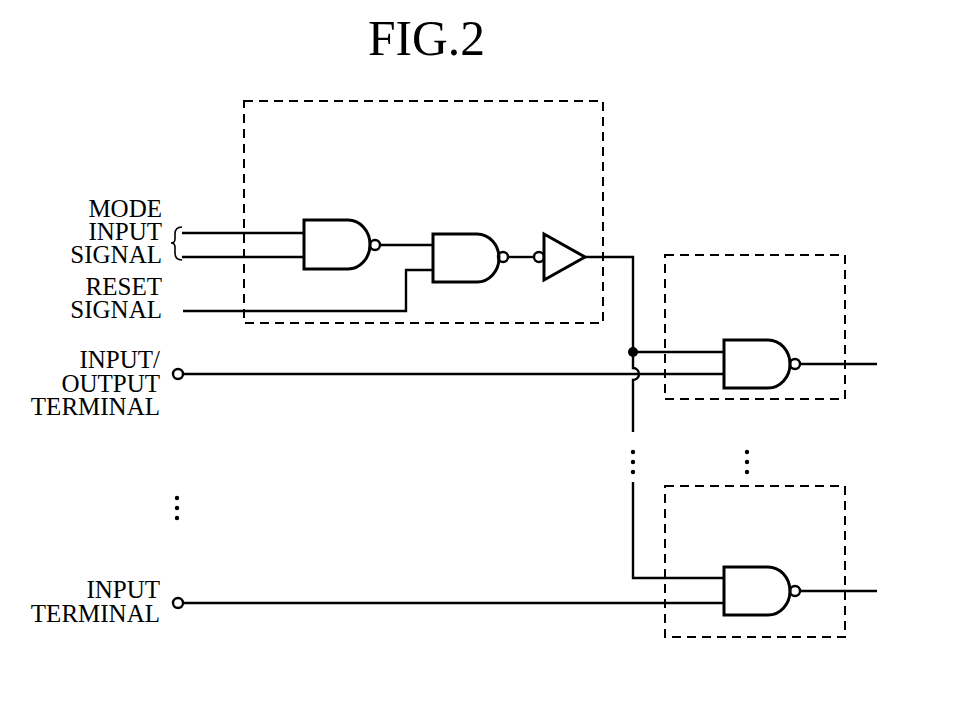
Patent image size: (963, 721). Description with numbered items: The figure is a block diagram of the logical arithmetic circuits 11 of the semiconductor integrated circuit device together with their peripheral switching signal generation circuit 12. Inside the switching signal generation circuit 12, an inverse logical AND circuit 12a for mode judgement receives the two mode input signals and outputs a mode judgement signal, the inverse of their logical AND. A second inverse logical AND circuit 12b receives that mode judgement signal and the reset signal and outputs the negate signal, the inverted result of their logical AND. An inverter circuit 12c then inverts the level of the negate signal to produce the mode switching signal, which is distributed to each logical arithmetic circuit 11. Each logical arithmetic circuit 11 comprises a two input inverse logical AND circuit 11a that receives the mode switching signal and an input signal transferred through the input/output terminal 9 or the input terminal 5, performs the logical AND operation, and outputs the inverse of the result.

The switching signal generation circuit 12 is at (603, 149).
The inverse logical AND circuit for mode judgement 12a is at (329, 218).
The inverse logical AND circuit for generation of a negate signal 12b is at (457, 232).
The inverter circuit 12c is at (551, 232).
The logical arithmetic circuit 11 is at (845, 312).
The inverse logical AND circuit of two inputs 11a is at (749, 388).
The input/output terminal 9 is at (178, 379).
The input terminal 5 is at (178, 608).